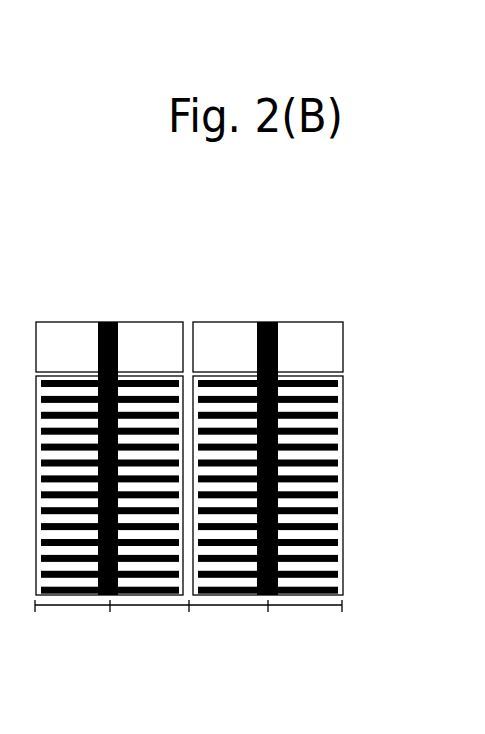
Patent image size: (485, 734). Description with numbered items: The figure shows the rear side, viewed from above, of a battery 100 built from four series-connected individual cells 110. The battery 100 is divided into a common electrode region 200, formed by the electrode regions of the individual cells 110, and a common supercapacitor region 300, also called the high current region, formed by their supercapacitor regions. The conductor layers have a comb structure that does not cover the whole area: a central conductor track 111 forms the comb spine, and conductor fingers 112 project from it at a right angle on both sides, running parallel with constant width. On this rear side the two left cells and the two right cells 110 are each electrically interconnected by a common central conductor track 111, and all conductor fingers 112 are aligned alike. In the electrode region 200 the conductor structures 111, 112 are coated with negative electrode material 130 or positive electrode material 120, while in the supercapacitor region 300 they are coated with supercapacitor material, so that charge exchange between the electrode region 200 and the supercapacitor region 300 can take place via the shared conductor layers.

The battery 100 is at (90, 114).
The common supercapacitor region 300 is at (348, 333).
The common electrode region 200 is at (348, 508).
The conductor fingers 112 is at (60, 433).
The central conductor track 111 is at (113, 435).
The individual cells 110 is at (314, 600).
The positive electrode material 120 is at (165, 552).
The negative electrode material 130 is at (77, 568).